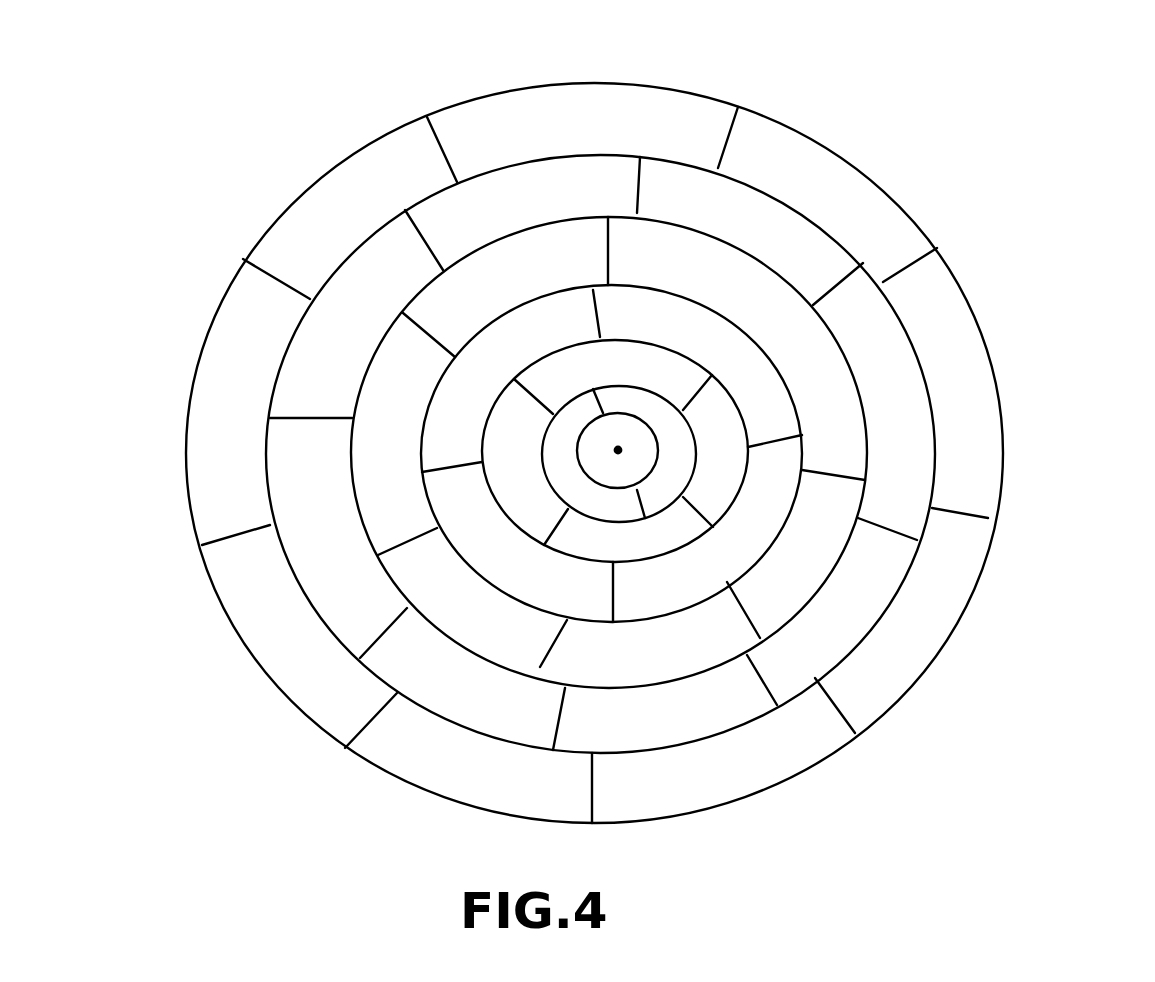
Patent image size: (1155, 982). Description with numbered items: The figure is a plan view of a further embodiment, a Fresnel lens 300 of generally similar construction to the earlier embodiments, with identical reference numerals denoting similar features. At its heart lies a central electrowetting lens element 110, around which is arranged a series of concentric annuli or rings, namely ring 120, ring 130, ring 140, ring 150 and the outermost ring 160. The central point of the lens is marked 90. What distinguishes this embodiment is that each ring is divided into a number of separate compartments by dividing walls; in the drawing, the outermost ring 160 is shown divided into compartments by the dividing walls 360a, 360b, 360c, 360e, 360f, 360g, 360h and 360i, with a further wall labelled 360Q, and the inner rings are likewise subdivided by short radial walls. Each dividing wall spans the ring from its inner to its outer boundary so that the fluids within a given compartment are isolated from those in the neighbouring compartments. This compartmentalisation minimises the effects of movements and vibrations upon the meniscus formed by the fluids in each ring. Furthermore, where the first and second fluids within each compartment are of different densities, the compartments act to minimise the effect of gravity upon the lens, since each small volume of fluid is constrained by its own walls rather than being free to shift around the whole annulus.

The Fresnel lens 300 is at (975, 693).
The center point 90 is at (618, 450).
The central electrowetting lens element 110 is at (620, 400).
The ring 120 is at (580, 377).
The ring 130 is at (518, 343).
The ring 140 is at (400, 388).
The ring 150 is at (312, 480).
The ring 160 is at (297, 648).
The dividing wall 360a is at (367, 728).
The dividing wall 360b is at (597, 792).
The dividing wall 360c is at (832, 698).
The dividing wall 360e is at (913, 250).
The dividing wall 360f is at (722, 132).
The dividing wall 360g is at (443, 143).
The dividing wall 360h is at (287, 280).
The dividing wall 360i is at (220, 547).
The divider line 360Q is at (970, 517).